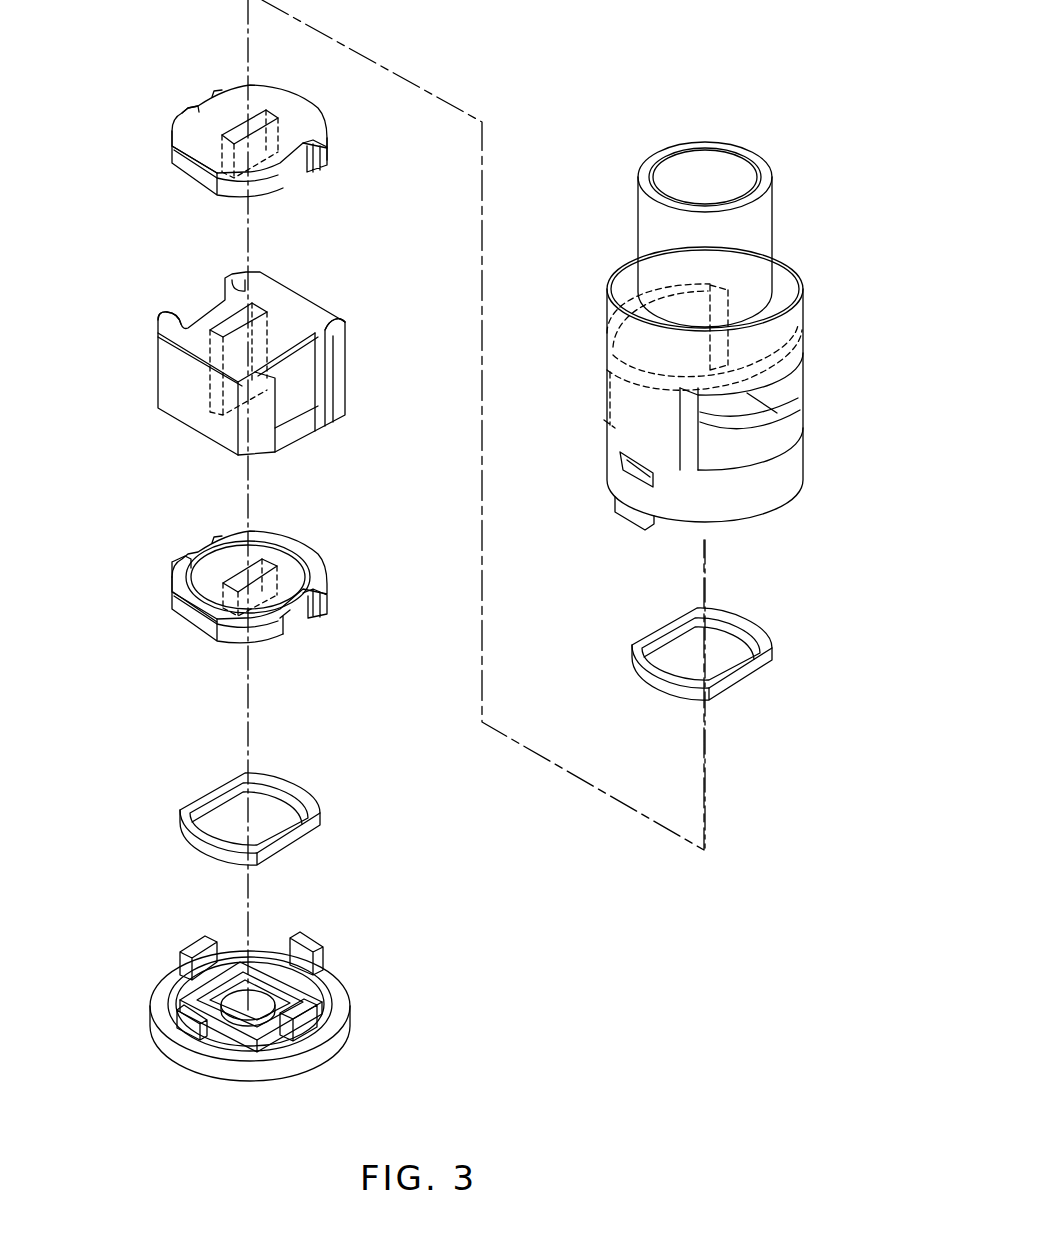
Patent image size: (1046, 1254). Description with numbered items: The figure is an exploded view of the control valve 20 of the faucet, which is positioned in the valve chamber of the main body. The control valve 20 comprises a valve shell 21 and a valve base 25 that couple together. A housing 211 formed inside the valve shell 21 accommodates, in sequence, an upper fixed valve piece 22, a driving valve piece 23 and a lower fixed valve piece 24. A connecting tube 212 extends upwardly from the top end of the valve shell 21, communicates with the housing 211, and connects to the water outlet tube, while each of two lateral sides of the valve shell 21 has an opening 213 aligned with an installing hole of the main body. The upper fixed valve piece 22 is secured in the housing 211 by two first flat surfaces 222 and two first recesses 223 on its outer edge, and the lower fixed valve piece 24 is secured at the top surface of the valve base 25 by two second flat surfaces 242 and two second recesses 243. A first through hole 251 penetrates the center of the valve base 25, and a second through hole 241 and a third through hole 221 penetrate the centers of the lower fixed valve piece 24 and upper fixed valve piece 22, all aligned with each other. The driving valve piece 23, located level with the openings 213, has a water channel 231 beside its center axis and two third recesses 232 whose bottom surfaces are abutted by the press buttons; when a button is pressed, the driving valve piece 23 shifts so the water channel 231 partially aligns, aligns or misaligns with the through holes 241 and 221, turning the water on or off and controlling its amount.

The control valve 20 is at (145, 1053).
The valve shell 21 is at (701, 311).
The housing 211 is at (752, 454).
The connecting tube 212 is at (722, 165).
The opening 213 is at (606, 364).
The upper fixed valve piece 22 is at (244, 133).
The third through hole 221 is at (260, 118).
The first flat surface 222 is at (308, 104).
The first recess 223 is at (203, 106).
The driving valve piece 23 is at (235, 349).
The water channel 231 is at (260, 303).
The third recess 232 is at (212, 303).
The lower fixed valve piece 24 is at (248, 574).
The second through hole 241 is at (260, 555).
The second flat surface 242 is at (308, 548).
The second recess 243 is at (203, 548).
The valve base 25 is at (290, 1021).
The first through hole 251 is at (227, 993).